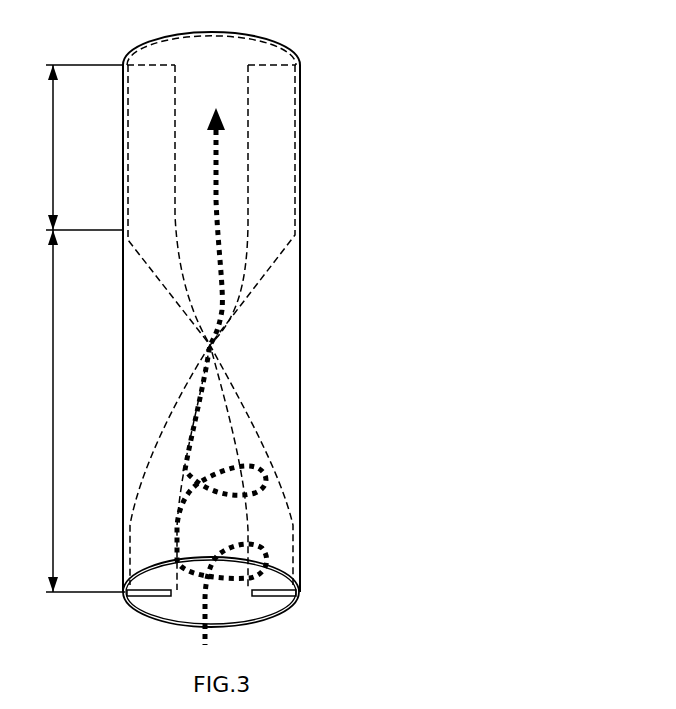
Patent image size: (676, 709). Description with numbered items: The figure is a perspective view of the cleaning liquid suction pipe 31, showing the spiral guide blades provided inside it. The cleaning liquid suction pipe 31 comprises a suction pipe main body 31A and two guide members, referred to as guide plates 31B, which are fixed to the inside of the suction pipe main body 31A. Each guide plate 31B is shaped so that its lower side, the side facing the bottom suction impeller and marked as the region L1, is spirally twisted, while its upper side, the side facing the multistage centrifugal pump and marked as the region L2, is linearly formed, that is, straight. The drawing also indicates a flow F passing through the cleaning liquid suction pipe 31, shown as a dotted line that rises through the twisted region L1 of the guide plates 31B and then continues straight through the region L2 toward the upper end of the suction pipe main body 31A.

The cleaning liquid suction pipe 31 is at (450, 483).
The suction pipe main body 31A is at (302, 433).
The guide plate 31B is at (152, 598).
The flow of fluid F is at (235, 327).
The spirally twisted region L1 is at (76, 411).
The linearly formed region L2 is at (75, 147).